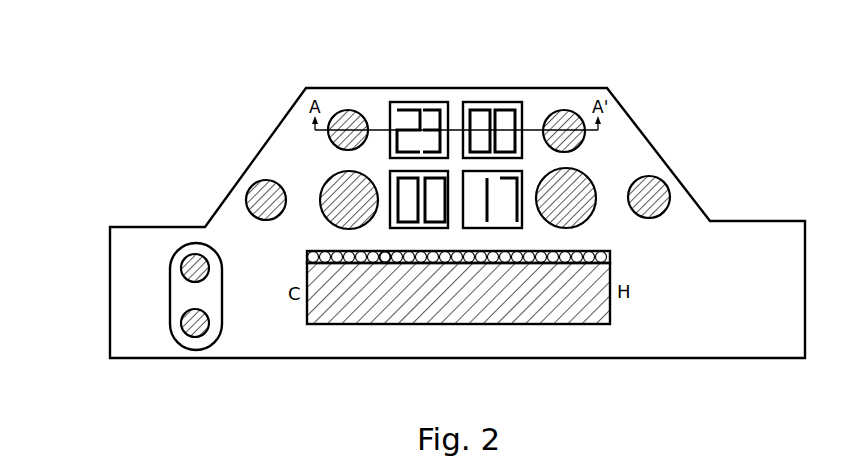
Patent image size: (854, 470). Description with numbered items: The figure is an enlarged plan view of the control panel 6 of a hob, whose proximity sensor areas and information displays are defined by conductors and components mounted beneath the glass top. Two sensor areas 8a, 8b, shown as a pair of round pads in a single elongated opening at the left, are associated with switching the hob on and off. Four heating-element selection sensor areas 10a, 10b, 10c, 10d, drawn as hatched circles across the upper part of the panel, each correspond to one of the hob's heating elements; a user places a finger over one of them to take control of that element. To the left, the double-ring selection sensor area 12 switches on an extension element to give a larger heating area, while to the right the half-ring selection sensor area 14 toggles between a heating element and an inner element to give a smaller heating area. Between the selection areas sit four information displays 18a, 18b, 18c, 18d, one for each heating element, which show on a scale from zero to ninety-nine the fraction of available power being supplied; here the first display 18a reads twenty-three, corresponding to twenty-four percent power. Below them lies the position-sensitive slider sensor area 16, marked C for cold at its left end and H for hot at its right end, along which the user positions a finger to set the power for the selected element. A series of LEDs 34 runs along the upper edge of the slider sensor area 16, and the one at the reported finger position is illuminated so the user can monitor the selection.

The control panel 6 is at (676, 91).
The proximity sensor area 8a is at (195, 340).
The proximity sensor area 8b is at (182, 267).
The heating-element selection sensor area 10a is at (347, 111).
The heating-element selection sensor area 10b is at (317, 199).
The heating-element selection sensor area 10c is at (561, 112).
The heating-element selection sensor area 10d is at (596, 197).
The double-ring selection sensor area 12 is at (245, 200).
The half-ring selection sensor area 14 is at (670, 195).
The slider sensor area 16 is at (478, 325).
The information display 18a is at (420, 102).
The information display 18b is at (390, 228).
The information display 18c is at (493, 102).
The information display 18d is at (522, 228).
The LED 34 is at (387, 262).